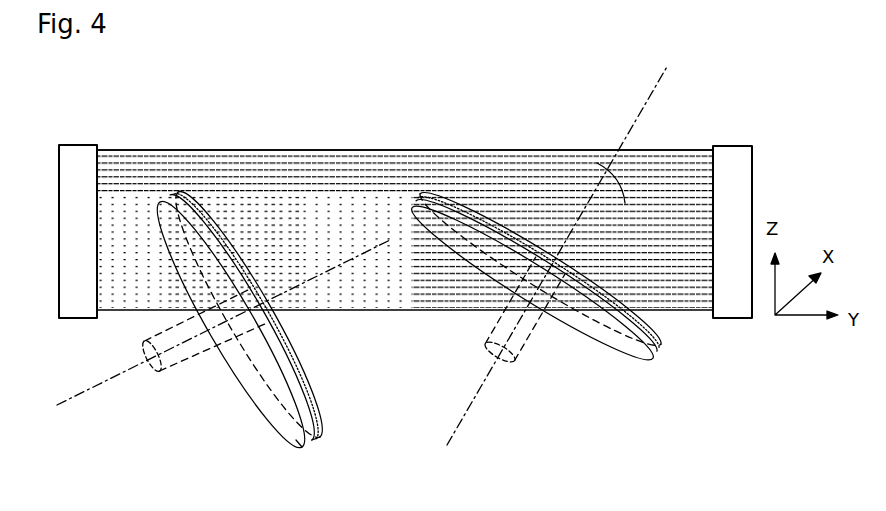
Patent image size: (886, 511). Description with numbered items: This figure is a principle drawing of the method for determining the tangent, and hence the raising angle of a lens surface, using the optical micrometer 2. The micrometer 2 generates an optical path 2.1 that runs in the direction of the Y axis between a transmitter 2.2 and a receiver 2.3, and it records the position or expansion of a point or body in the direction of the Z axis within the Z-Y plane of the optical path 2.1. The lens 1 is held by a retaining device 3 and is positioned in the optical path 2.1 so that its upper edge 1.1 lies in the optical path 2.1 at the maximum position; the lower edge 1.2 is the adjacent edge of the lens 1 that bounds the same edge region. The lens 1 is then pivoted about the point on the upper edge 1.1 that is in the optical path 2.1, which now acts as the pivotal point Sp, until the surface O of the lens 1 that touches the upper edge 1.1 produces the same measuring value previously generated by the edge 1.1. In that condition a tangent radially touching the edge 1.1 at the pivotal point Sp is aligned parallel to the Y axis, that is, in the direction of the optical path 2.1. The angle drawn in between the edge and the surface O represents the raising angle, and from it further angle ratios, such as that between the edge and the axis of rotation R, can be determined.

The lens 1 is at (262, 380).
The upper edge 1.1 is at (320, 437).
The lower edge 1.2 is at (303, 446).
The optical micrometer 2 is at (414, 267).
The optical path 2.1 is at (548, 153).
The transmitter 2.2 is at (738, 295).
The receiver 2.3 is at (78, 297).
The retaining device 3 is at (173, 367).
The axis of rotation R is at (85, 395).
The pivotal point Sp is at (173, 198).
The surface of the lens O is at (197, 193).
The Z axis Z is at (98, 193).